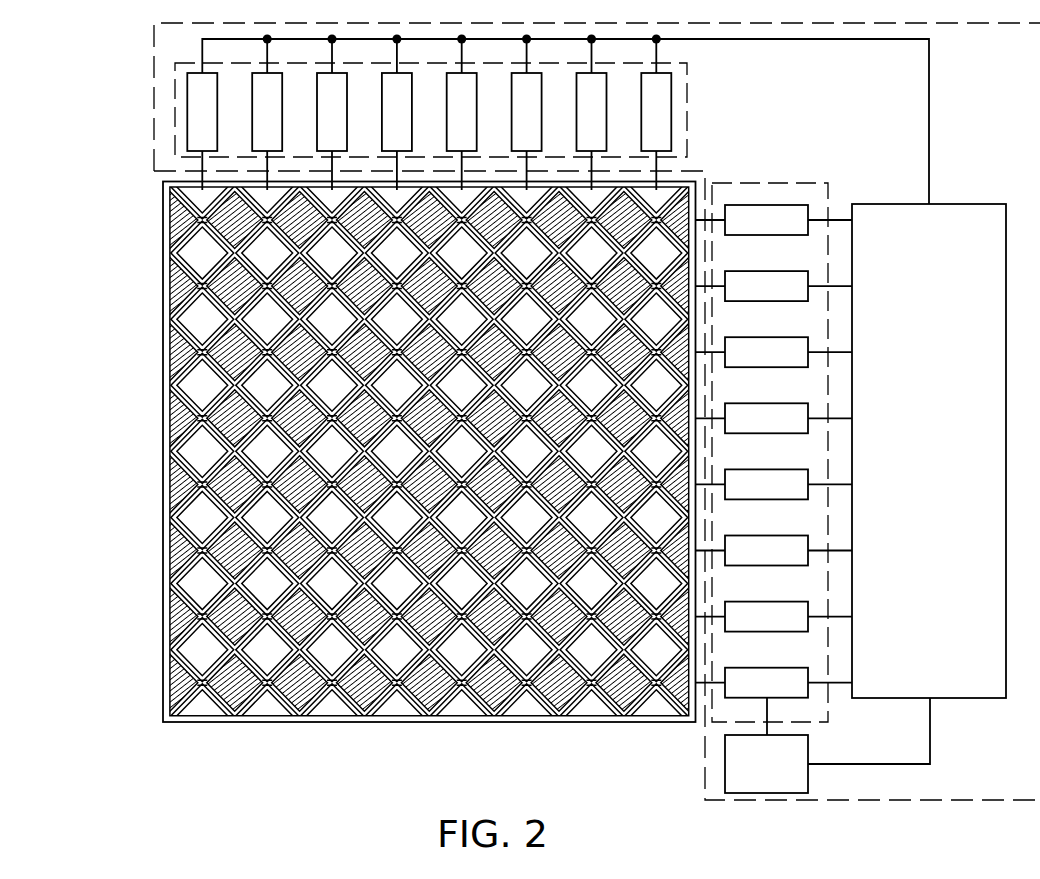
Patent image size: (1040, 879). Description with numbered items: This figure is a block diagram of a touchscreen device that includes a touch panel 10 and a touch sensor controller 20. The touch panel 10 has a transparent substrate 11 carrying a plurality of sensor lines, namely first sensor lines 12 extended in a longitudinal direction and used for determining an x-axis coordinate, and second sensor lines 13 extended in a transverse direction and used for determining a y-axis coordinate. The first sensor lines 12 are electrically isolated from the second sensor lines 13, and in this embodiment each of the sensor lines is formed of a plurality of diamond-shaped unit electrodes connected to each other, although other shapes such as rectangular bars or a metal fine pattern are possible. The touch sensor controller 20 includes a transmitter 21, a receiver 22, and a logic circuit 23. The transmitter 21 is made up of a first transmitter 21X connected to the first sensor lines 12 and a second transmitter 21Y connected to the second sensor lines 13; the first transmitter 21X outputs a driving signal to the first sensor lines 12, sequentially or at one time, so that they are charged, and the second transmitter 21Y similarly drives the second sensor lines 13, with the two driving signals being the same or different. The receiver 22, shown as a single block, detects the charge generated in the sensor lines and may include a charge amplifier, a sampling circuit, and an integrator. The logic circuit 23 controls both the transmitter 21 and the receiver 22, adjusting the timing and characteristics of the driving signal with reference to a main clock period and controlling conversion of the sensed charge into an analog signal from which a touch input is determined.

The touch panel 10 is at (394, 459).
The transparent substrate 11 is at (163, 196).
The first sensor lines 12 is at (185, 317).
The second sensor lines 13 is at (172, 278).
The touch sensor controller 20 is at (154, 98).
The transmitter 21 is at (552, 379).
The first transmitter 21X is at (688, 147).
The second transmitter 21Y is at (793, 183).
The receiver 22 is at (972, 204).
The logic circuit 23 is at (725, 762).